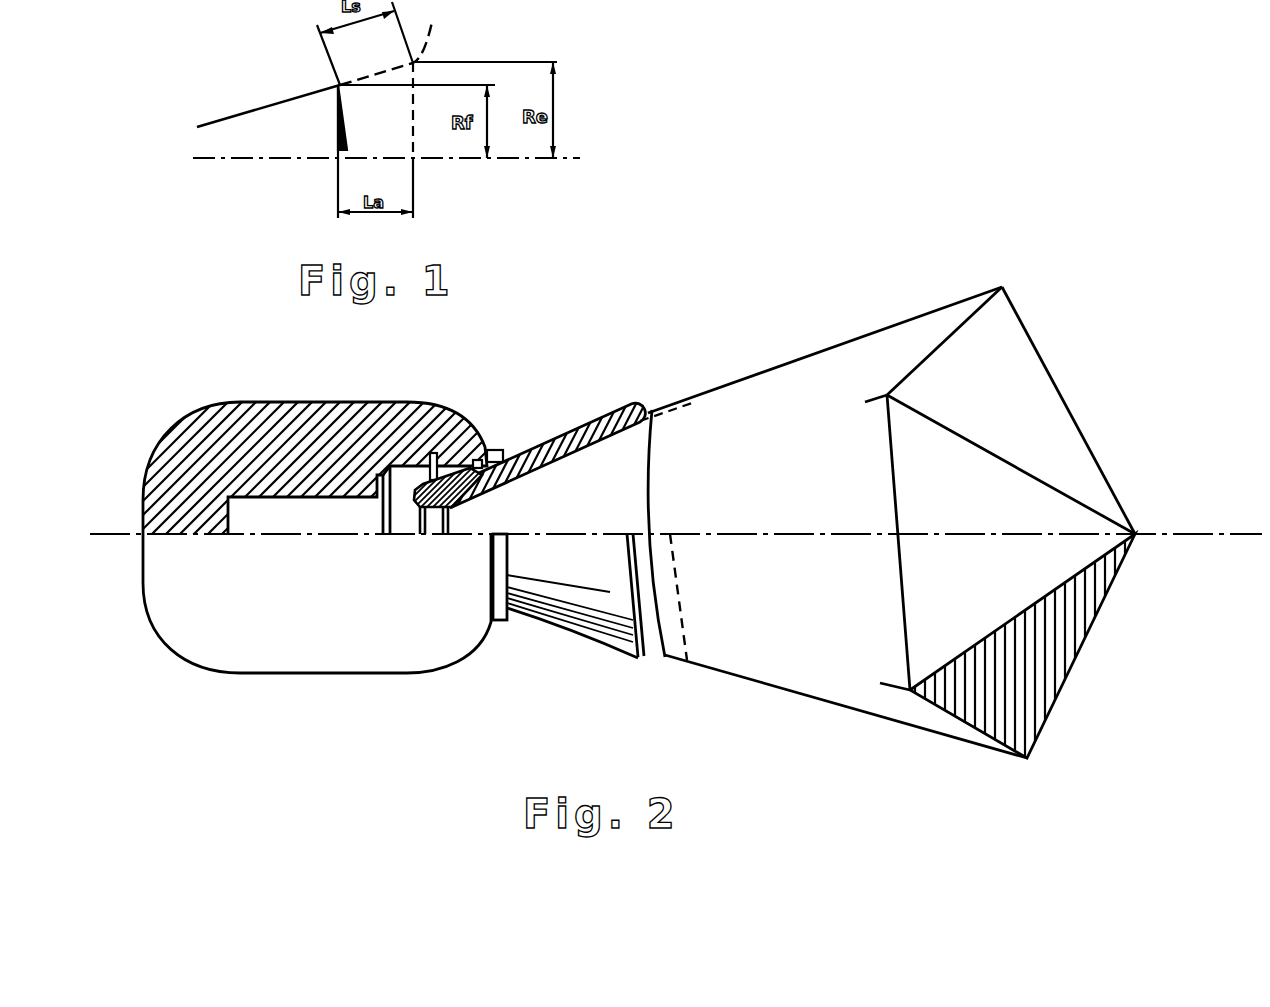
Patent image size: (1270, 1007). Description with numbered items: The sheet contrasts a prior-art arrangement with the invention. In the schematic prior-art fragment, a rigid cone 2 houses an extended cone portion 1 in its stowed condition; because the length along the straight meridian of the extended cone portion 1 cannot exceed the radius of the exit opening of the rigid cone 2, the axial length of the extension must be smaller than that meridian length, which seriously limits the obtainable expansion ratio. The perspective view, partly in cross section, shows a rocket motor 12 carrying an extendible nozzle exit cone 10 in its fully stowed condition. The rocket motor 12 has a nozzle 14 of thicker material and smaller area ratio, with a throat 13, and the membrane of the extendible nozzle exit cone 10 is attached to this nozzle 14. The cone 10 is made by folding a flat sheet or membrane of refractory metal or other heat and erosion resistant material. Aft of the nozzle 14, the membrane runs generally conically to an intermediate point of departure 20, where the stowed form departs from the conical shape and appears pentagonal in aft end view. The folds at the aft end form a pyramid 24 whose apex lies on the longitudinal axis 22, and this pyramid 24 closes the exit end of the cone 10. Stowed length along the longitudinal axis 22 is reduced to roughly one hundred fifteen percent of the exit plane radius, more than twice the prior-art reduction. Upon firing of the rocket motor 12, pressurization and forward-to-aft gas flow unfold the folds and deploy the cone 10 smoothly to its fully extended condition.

In FIG. 1, the extended cone portion 1 is at (390, 50).
In FIG. 1, the rigid cone 2 is at (308, 95).
In FIG. 2, the extendible nozzle exit cone 10 is at (828, 330).
In FIG. 2, the rocket motor 12 is at (337, 402).
In FIG. 2, the throat 13 is at (438, 508).
In FIG. 2, the nozzle 14 is at (557, 437).
In FIG. 2, the point of departure 20 is at (1002, 286).
In FIG. 2, the longitudinal axis 22 is at (1172, 530).
In FIG. 2, the pyramid 24 is at (950, 431).